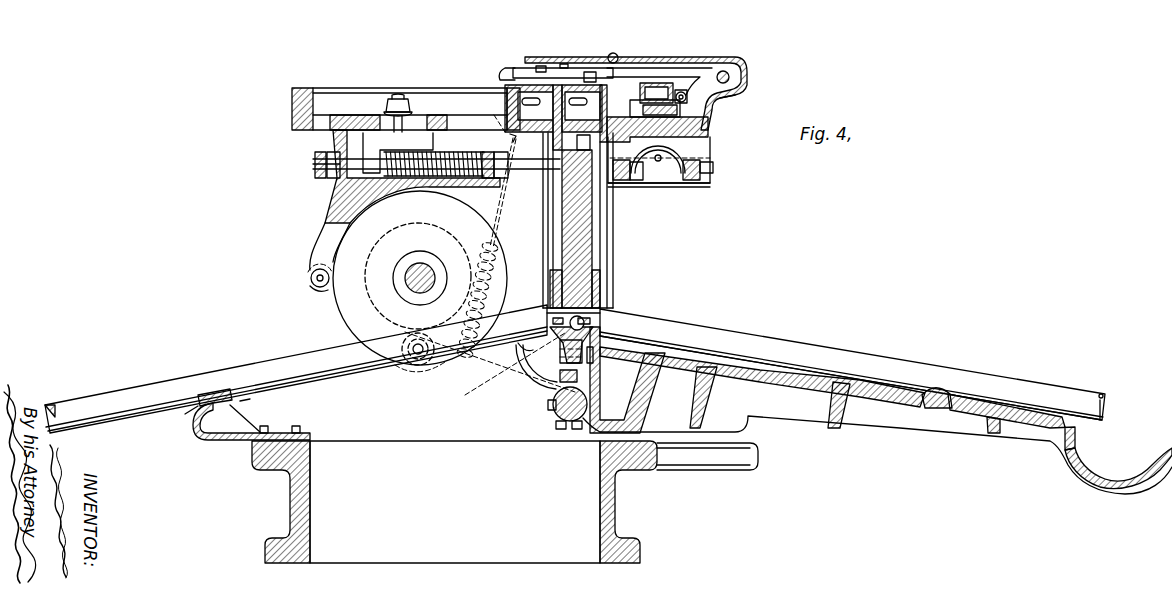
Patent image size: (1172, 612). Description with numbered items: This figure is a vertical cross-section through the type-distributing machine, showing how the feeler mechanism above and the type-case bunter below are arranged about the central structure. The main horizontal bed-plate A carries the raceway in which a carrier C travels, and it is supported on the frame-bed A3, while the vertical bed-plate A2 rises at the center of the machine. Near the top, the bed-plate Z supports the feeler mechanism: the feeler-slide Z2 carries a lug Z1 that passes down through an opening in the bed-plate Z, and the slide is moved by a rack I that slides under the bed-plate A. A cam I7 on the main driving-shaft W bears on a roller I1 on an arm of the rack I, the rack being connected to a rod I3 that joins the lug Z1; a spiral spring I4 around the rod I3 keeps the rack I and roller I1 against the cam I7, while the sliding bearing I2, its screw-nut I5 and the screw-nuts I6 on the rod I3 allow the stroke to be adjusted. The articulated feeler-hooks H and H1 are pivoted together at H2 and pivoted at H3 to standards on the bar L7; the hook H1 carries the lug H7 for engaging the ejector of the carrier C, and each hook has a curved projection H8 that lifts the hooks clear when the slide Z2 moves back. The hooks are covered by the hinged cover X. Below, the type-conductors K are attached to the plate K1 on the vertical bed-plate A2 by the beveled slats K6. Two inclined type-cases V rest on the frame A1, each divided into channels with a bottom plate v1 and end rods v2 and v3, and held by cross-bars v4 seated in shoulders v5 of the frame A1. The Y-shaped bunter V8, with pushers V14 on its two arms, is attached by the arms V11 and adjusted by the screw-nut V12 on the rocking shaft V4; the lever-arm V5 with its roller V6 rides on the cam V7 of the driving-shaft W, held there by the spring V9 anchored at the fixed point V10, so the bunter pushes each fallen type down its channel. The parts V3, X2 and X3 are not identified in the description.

The bed-plate A is at (292, 108).
The frame A1 is at (940, 423).
The vertical bed-plate A2 is at (594, 247).
The frame-bed A3 is at (293, 499).
The carrier C is at (553, 108).
The feeler-hook H is at (603, 76).
The second hook H1 is at (540, 66).
The pivot H2 is at (590, 72).
The pivot H3 is at (728, 72).
The lug H7 is at (556, 66).
The curved projection H8 is at (512, 78).
The rack I is at (330, 212).
The roller I1 is at (311, 280).
The sliding bearing I2 is at (377, 135).
The rod I3 is at (350, 160).
The spiral spring I4 is at (443, 158).
The screw-nut I5 is at (400, 98).
The screw-nut I6 is at (330, 172).
The cam I7 is at (336, 313).
The type-conductor K is at (545, 188).
The plate K1 is at (553, 222).
The slat K6 is at (550, 272).
The bar L7 is at (666, 94).
The type-case V is at (178, 388).
The bottom plate v1 is at (168, 408).
The horizontal rod v2 is at (52, 403).
The horizontal rod v3 is at (56, 432).
The cross-bar v4 is at (214, 394).
The shoulder v5 is at (985, 387).
The table support frame V3 is at (602, 358).
The rocking shaft V4 is at (553, 405).
The lever-arm V5 is at (487, 383).
The roller V6 is at (416, 366).
The cam V7 is at (380, 316).
The bunter V8 is at (603, 314).
The spring V9 is at (504, 199).
The fixed point V10 is at (497, 120).
The arm V11 is at (545, 378).
The screw-nut V12 is at (552, 370).
The pusher V14 is at (548, 327).
The main driving-shaft W is at (410, 275).
The cover X is at (678, 84).
The pivot X2 is at (619, 57).
The hook end X3 is at (740, 84).
The bed-plate Z is at (708, 131).
The lug Z1 is at (662, 141).
The feeler-slide Z2 is at (707, 107).